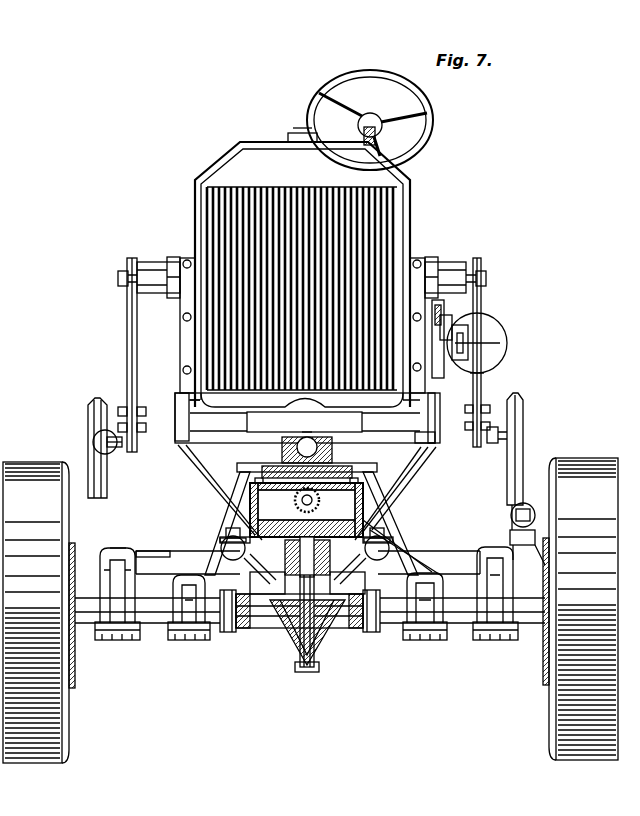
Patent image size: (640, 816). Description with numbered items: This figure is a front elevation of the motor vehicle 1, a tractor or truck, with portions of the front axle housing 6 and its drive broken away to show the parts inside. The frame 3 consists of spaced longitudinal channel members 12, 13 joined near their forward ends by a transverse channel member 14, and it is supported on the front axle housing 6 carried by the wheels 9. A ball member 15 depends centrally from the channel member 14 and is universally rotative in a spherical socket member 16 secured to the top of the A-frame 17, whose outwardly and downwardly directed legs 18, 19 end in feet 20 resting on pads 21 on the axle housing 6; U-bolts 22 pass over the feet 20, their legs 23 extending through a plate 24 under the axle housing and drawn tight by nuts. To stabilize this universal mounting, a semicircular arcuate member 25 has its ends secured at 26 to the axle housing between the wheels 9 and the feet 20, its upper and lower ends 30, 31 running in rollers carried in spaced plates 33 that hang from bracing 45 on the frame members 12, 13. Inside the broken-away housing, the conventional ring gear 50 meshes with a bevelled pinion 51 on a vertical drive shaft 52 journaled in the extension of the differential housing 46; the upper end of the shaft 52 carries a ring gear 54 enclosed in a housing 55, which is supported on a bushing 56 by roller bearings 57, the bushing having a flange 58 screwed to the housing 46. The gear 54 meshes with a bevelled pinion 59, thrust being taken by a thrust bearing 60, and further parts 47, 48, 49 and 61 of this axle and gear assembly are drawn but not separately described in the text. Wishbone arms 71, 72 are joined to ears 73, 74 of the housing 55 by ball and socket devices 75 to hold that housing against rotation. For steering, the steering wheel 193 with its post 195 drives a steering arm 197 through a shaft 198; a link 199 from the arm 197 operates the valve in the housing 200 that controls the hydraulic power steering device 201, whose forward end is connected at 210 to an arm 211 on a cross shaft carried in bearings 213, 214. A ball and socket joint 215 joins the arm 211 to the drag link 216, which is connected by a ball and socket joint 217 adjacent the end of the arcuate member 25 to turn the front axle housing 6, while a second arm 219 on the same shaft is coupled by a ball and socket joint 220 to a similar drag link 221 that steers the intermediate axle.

The motor vehicle 1 is at (424, 244).
The frame 3 is at (172, 448).
The front axle housing 6 is at (382, 630).
The wheels 9 is at (68, 758).
The channel member 12 is at (177, 395).
The channel member 13 is at (438, 442).
The transverse channel member 14 is at (411, 440).
The ball member 15 is at (305, 437).
The spherical socket member 16 is at (282, 452).
The A-frame 17 is at (240, 466).
The leg 18 is at (222, 522).
The leg 19 is at (398, 522).
The feet 20 is at (183, 578).
The pads 21 is at (178, 588).
The U-bolts 22 is at (168, 562).
The legs 23 is at (190, 642).
The plate 24 is at (166, 642).
The arcuate member 25 is at (157, 550).
The ends of arcuate member 26 is at (105, 552).
The upper end of arcuate member 30 is at (120, 547).
The lower end of arcuate member 31 is at (452, 535).
The plate 33 is at (258, 585).
The bracing 45 is at (412, 472).
The differential housing 46 is at (318, 673).
The cone housing 47 is at (322, 651).
The axle hub 48 is at (228, 634).
The axle hub 49 is at (372, 634).
The ring gear 50 is at (306, 674).
The bevelled pinion 51 is at (366, 579).
The drive shaft 52 is at (332, 560).
The ring gear 54 is at (390, 494).
The housing 55 is at (408, 503).
The bushing 56 is at (366, 548).
The roller bearings 57 is at (222, 503).
The flange 58 is at (245, 550).
The bevelled pinion 59 is at (312, 496).
The thrust bearing 60 is at (215, 488).
The gear housing 61 is at (299, 500).
The arm 71 is at (243, 565).
The arm 72 is at (370, 566).
The ear 73 is at (222, 540).
The ear 74 is at (442, 520).
The ball and socket devices 75 is at (393, 540).
The steering wheel 193 is at (308, 108).
The post 195 is at (384, 150).
The steering arm 197 is at (458, 330).
The shaft 198 is at (440, 381).
The link 199 is at (443, 326).
The housing 200 is at (501, 331).
The hydraulic power steering device 201 is at (496, 356).
The forward end connection 210 is at (500, 344).
The arm 211 is at (482, 382).
The bearing 213 is at (440, 259).
The bearing 214 is at (168, 260).
The ball and socket joint 215 is at (496, 446).
The drag link 216 is at (524, 405).
The ball and socket joint 217 is at (511, 514).
The arm 219 is at (128, 357).
The ball and socket joint 220 is at (111, 452).
The drag link 221 is at (88, 428).